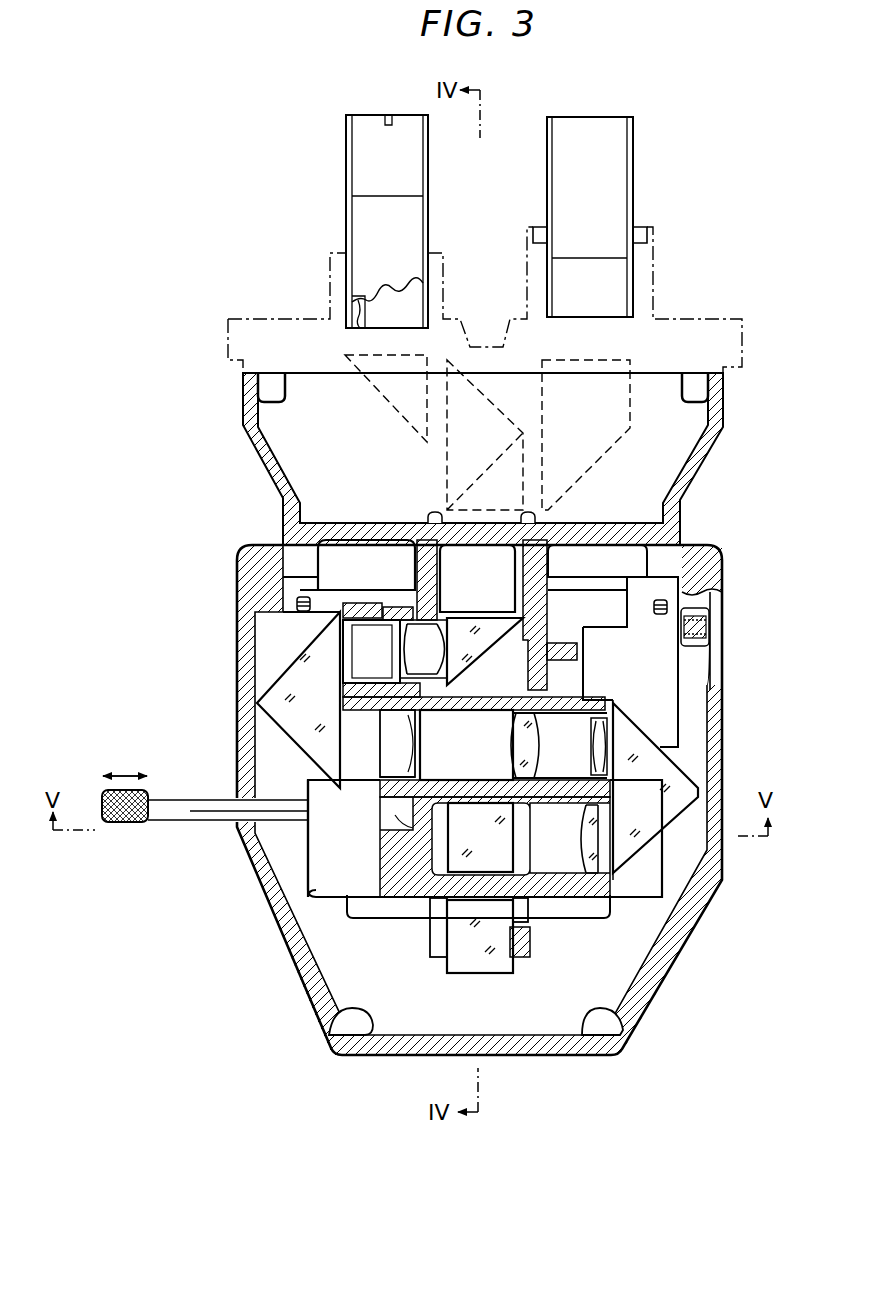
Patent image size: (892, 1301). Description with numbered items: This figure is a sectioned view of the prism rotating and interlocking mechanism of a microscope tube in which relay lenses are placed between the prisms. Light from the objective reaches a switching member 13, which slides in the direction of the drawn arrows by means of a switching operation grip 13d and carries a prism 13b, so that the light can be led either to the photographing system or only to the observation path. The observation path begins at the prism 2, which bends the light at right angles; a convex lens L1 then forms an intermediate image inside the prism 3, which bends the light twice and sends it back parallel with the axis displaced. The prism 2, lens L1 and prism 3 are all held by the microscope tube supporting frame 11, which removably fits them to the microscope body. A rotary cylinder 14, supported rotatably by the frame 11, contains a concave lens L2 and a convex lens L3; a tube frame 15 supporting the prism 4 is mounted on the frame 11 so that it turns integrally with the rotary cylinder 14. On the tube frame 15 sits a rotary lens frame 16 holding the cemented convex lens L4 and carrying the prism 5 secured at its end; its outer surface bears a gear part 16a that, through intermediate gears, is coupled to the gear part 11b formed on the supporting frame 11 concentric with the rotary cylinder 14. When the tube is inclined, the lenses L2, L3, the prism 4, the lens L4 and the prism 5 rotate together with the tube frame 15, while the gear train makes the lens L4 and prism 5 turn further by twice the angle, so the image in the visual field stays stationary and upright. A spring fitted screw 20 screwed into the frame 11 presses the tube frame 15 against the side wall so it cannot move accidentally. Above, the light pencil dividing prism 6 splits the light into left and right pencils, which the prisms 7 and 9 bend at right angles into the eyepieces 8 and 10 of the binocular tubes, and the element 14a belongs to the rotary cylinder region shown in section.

The prism 2 is at (480, 837).
The prism 3 is at (655, 790).
The prism 4 is at (298, 700).
The prism 5 is at (470, 657).
The light pencil dividing prism 6 is at (447, 478).
The prism 7 is at (600, 463).
The eyepiece 8 is at (633, 176).
The prism 9 is at (380, 397).
The eyepiece 10 is at (428, 174).
The microscope tube supporting frame 11 is at (240, 582).
The gear part 11b is at (399, 743).
The switching member 13 is at (430, 938).
The prism 13b is at (473, 970).
The switching operation grip 13d is at (128, 826).
The rotary cylinder 14 is at (513, 745).
The lens barrel flange 14a is at (399, 764).
The tube frame 15 is at (265, 465).
The rotary lens frame 16 is at (372, 605).
The gear part 16a is at (393, 605).
The spring fitted screw 20 is at (712, 628).
The convex lens L1 is at (590, 840).
The concave lens L2 is at (594, 754).
The convex lens L3 is at (528, 748).
The cemented convex lens L4 is at (405, 649).